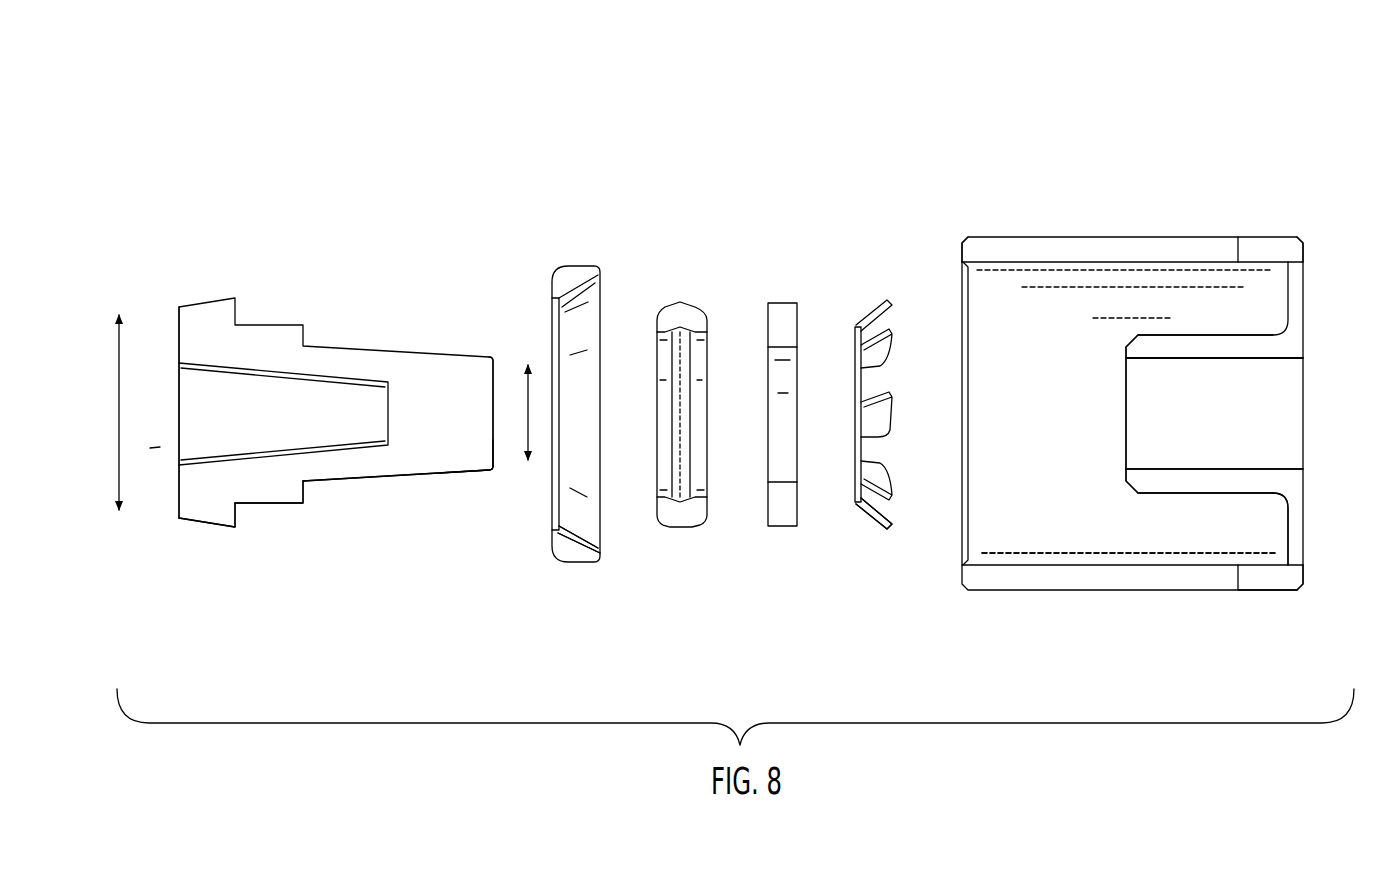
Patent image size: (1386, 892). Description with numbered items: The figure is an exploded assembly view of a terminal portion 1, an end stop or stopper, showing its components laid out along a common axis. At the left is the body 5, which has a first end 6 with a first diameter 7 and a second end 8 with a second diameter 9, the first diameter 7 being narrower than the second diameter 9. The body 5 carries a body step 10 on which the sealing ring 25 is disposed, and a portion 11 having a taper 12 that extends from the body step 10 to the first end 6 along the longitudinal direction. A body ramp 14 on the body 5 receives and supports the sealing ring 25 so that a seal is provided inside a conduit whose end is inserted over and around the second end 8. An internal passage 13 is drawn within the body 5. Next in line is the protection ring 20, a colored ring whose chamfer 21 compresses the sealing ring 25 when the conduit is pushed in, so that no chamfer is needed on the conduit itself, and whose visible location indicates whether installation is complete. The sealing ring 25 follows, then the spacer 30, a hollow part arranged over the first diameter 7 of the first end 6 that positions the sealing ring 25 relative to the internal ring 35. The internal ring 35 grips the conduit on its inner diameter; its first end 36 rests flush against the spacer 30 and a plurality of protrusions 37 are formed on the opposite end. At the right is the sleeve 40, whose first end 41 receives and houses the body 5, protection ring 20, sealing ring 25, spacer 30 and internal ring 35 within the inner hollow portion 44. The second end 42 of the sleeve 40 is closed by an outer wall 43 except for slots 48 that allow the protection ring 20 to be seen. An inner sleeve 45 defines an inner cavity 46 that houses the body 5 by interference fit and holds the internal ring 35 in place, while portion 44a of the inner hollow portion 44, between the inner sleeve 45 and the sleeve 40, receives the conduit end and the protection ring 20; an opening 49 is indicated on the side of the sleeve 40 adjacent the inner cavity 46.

The terminal portion 1 is at (215, 160).
The body 5 is at (390, 349).
The first end 6 is at (494, 356).
The first diameter 7 is at (530, 392).
The second end 8 is at (177, 518).
The second diameter 9 is at (108, 412).
The body step 10 is at (293, 503).
The portion 11 is at (366, 479).
The taper 12 is at (457, 473).
The bore 13 is at (333, 390).
The body ramp 14 is at (213, 528).
The protection ring 20 is at (585, 263).
The chamfer 21 is at (589, 551).
The sealing ring 25 is at (679, 300).
The spacer 30 is at (782, 301).
The internal ring 35 is at (900, 373).
The first end 36 is at (855, 325).
The protrusions 37 is at (877, 525).
The sleeve 40 is at (1059, 237).
The first end 41 is at (963, 237).
The second end 42 is at (1305, 242).
The outer wall 43 is at (1288, 533).
The inner hollow portion 44 is at (1022, 543).
The portion 44a is at (1238, 237).
The inner sleeve 45 is at (1177, 484).
The inner cavity 46 is at (1182, 368).
The slots 48 is at (1260, 600).
The slot 49 is at (1310, 429).